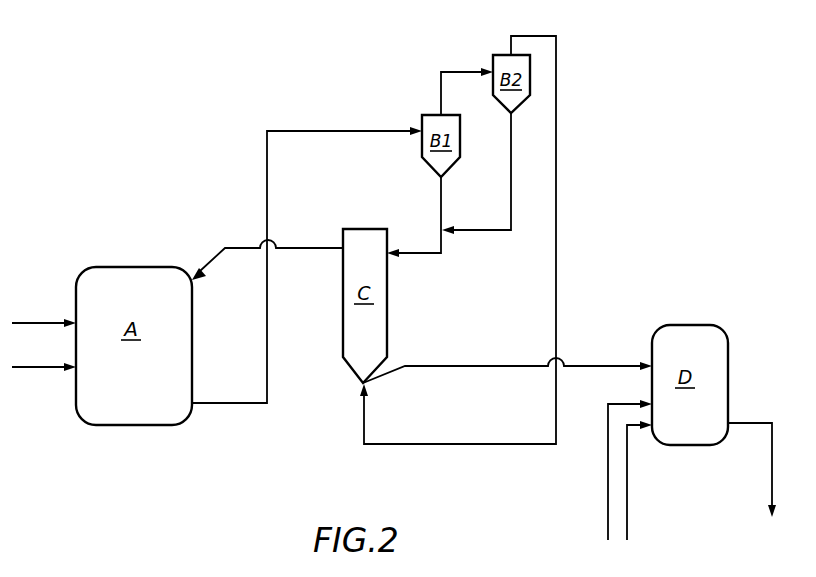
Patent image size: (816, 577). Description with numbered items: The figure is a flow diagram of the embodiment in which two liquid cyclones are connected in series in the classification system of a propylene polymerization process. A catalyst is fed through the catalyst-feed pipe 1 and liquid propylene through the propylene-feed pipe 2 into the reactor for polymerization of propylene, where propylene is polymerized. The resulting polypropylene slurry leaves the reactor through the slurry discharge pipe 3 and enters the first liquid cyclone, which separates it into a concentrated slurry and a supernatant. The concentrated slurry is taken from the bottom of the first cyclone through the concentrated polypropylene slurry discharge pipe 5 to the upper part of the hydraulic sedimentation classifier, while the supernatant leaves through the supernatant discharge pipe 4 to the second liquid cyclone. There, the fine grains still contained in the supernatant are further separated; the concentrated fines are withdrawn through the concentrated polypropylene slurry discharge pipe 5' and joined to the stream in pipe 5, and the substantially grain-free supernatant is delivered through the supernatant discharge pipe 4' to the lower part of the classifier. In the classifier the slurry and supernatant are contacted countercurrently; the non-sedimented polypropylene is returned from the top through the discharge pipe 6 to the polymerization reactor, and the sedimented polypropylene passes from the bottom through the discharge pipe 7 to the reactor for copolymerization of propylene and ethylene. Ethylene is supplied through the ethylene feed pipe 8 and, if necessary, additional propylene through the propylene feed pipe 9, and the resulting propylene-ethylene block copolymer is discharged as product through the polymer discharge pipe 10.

The catalyst-feed pipe 1 is at (43, 322).
The propylene-feed pipe 2 is at (48, 373).
The slurry discharge pipe 3 is at (340, 131).
The supernatant discharge pipe 4 is at (467, 63).
The supernatant discharge pipe 4' is at (482, 240).
The concentrated polypropylene slurry discharge pipe 5 is at (422, 237).
The concentrated polypropylene slurry discharge pipe 5' is at (476, 173).
The discharge pipe of hydraulic sedimentation classifier 6 is at (231, 248).
The discharge pipe of hydraulic sedimentation classifier 7 is at (460, 368).
The ethylene feed pipe 8 is at (606, 485).
The propylene feed pipe 9 is at (629, 486).
The polymer discharge pipe 10 is at (771, 470).